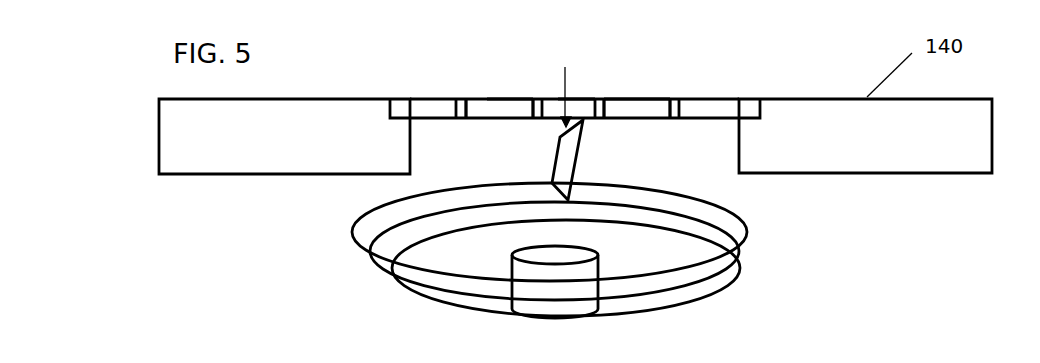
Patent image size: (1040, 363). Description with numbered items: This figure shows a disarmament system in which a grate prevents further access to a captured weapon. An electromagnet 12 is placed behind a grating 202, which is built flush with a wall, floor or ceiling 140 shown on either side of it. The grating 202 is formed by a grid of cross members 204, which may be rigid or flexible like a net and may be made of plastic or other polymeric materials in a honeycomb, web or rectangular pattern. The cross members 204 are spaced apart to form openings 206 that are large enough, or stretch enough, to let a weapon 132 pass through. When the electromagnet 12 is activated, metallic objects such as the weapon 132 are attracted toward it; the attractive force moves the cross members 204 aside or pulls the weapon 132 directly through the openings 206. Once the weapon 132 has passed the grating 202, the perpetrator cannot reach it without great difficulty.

The electromagnet 12 is at (752, 284).
The weapon 132 is at (563, 143).
The wall, floor or ceiling 140 is at (333, 97).
The grating 202 is at (440, 97).
The cross members 204 is at (677, 97).
The openings 206 is at (557, 98).